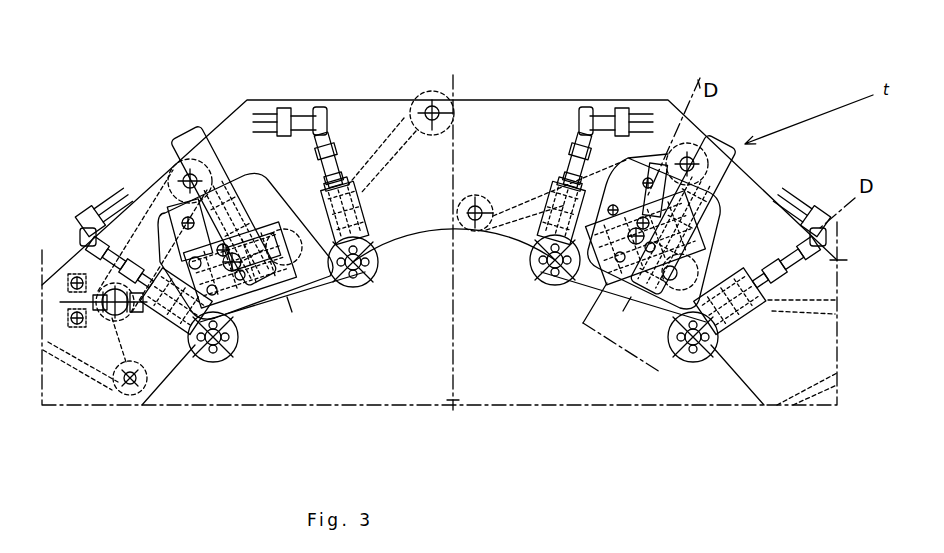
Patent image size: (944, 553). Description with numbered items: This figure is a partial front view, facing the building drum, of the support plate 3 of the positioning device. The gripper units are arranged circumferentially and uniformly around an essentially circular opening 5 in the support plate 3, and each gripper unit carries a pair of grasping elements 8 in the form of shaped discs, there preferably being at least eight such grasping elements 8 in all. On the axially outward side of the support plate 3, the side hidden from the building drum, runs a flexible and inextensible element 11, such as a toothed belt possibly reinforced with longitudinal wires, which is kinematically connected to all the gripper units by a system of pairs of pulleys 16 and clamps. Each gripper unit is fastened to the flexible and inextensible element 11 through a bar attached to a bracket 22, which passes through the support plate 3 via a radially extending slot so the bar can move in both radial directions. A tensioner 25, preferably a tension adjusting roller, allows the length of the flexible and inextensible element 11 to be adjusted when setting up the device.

The support plate 3 is at (520, 123).
The essentially circular opening 5 is at (350, 373).
The grasping elements 8 is at (540, 273).
The flexible and inextensible element 11 is at (457, 150).
The pulleys 16 is at (428, 97).
The bracket 22 is at (692, 165).
The tensioner 25 is at (110, 320).